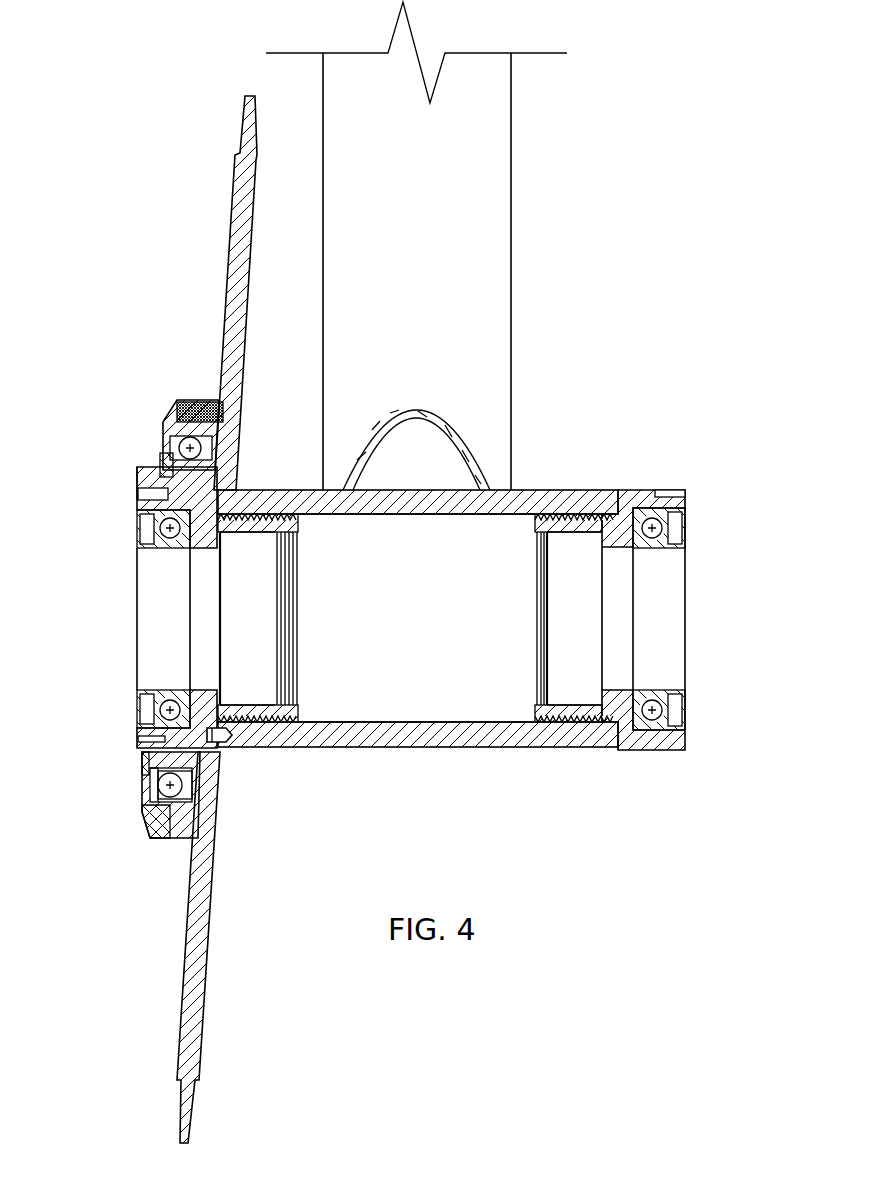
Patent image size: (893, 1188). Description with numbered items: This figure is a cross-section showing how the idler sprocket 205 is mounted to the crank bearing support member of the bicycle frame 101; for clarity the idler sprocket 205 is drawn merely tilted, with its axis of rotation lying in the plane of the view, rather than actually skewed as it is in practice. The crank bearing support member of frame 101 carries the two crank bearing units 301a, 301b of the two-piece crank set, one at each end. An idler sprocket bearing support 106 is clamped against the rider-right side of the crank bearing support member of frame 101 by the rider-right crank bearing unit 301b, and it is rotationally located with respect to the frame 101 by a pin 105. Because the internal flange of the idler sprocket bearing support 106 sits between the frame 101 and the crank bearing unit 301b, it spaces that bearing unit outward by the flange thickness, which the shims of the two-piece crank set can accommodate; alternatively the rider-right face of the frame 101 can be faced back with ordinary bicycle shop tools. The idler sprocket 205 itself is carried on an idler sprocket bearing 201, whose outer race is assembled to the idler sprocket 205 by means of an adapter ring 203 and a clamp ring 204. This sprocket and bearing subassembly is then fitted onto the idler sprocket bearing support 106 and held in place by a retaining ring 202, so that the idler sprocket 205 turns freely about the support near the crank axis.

The bicycle frame 101 is at (545, 490).
The pin 105 is at (228, 750).
The idler sprocket bearing support 106 is at (137, 477).
The idler sprocket bearing 201 is at (145, 787).
The retaining ring 202 is at (163, 462).
The adapter ring 203 is at (172, 838).
The clamp ring 204 is at (158, 813).
The idler sprocket 205 is at (222, 283).
The crank bearing unit 301a is at (688, 490).
The rider-right crank bearing unit 301b is at (136, 742).